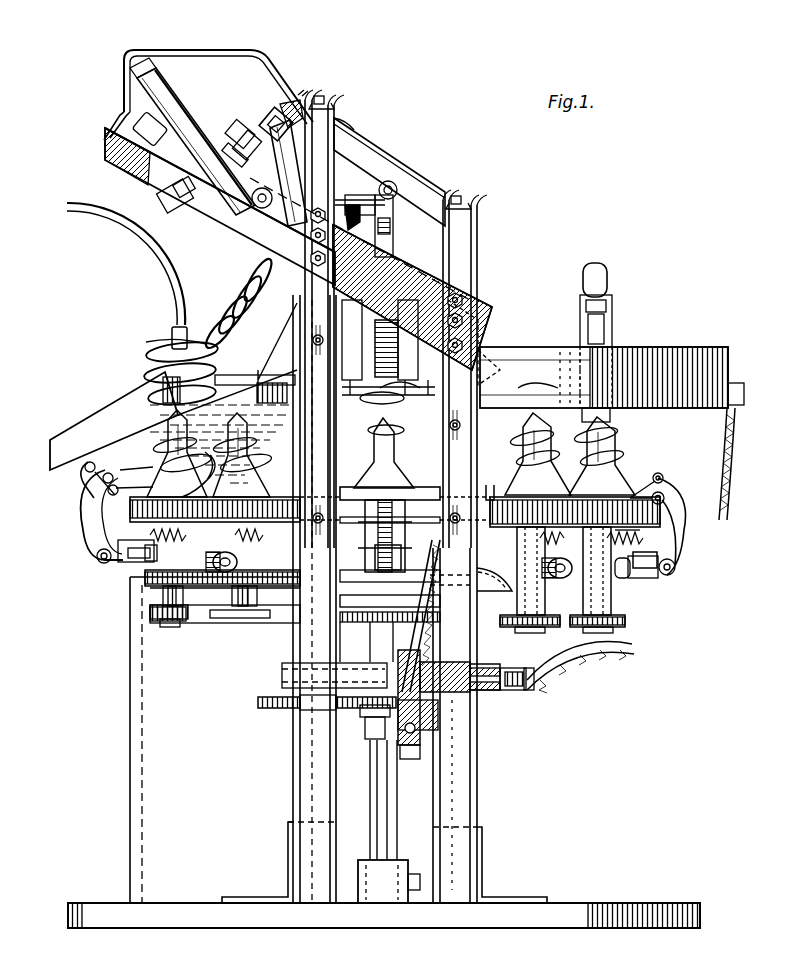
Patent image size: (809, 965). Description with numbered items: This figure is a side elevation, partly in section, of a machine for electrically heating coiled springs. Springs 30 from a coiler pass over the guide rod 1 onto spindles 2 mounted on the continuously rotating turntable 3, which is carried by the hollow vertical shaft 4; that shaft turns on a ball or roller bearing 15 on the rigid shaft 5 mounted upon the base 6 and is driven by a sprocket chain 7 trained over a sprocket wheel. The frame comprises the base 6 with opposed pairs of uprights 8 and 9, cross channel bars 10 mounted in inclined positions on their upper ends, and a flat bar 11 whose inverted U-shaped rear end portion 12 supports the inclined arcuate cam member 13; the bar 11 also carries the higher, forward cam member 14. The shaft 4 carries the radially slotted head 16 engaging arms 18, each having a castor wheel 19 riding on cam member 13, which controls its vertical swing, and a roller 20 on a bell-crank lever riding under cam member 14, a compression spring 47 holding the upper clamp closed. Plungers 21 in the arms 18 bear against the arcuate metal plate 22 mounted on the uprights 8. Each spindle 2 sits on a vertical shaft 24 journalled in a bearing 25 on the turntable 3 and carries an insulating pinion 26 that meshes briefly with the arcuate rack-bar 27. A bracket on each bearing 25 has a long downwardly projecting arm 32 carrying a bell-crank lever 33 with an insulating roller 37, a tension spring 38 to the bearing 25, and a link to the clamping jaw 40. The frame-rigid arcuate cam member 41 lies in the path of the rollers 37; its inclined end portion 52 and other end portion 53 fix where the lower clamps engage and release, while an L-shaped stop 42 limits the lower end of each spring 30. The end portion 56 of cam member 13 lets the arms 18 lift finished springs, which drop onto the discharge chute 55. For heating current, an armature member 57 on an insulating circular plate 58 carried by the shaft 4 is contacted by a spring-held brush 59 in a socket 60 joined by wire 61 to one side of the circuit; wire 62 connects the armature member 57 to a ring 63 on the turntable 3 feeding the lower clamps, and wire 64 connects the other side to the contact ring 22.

The guide rod 1 is at (142, 245).
The spindles 2 is at (391, 212).
The turntable 3 is at (280, 485).
The hollow vertical shaft 4 is at (375, 645).
The rigid shaft 5 is at (393, 796).
The base 6 is at (584, 886).
The sprocket chain 7 is at (262, 710).
The uprights 8 is at (312, 779).
The uprights 9 is at (465, 782).
The cross channel bars 10 is at (342, 112).
The flat bar 11 is at (174, 50).
The inverted U-shaped rear end portion 12 is at (120, 114).
The inclined arcuate cam member 13 is at (225, 201).
The inclined arcuate cam member 14 is at (359, 161).
The ball or roller bearing 15 is at (412, 728).
The slotted head 16 is at (404, 376).
The arms 18 is at (198, 124).
The castor wheel 19 is at (124, 150).
The roller 20 is at (276, 116).
The spring projected plungers 21 is at (150, 66).
The arcuate metal plate 22 is at (716, 342).
The vertical shafts 24 is at (178, 622).
The bearings 25 is at (244, 614).
The spur gear pinion 26 is at (170, 626).
The arcuate rack-bar 27 is at (284, 616).
The spring 30 is at (238, 300).
The downwardly projecting arm 32 is at (94, 543).
The bell-crank lever 33 is at (378, 510).
The roller 37 is at (238, 548).
The tension spring 38 is at (645, 533).
The clamping jaw 40 is at (112, 467).
The arcuate cam member 41 is at (222, 582).
The L-shaped stop 42 is at (668, 487).
The compression spring 47 is at (362, 193).
The inclined end portion 52 is at (429, 580).
The other end portion 53 is at (502, 588).
The discharge chute 55 is at (96, 412).
The end portion 56 is at (478, 358).
The armature member 57 is at (470, 663).
The circular plate 58 is at (400, 665).
The brush 59 is at (506, 688).
The socket 60 is at (504, 668).
The wire 61 is at (624, 651).
The wire 62 is at (380, 551).
The ring 63 is at (488, 468).
The wire 64 is at (728, 461).